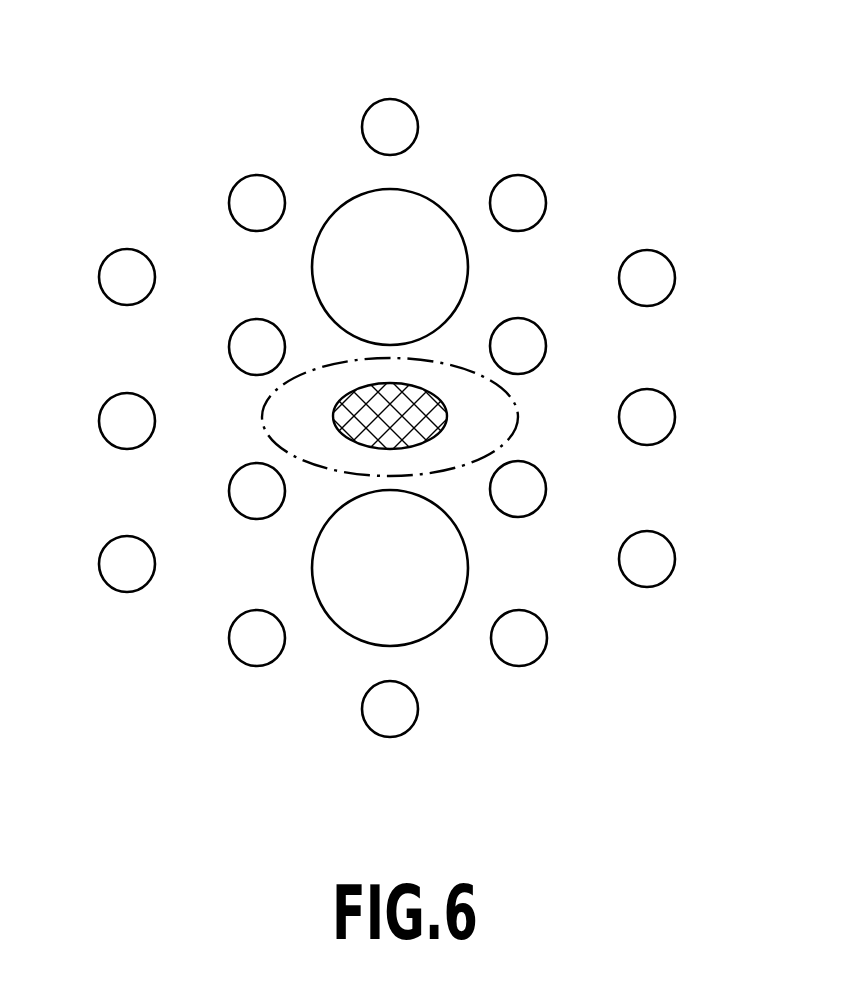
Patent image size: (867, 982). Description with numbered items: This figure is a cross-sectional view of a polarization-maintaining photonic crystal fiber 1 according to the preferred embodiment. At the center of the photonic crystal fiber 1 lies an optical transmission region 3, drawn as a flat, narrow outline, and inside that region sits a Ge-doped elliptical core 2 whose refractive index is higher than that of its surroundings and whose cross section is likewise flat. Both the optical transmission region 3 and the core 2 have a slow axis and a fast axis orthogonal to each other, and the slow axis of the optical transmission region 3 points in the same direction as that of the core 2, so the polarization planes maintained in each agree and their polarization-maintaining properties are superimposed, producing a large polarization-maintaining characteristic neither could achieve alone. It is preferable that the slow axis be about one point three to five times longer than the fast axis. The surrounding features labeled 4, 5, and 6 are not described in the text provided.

The photonic crystal fiber 1 is at (403, 39).
The elliptical core 2 is at (447, 414).
The optical transmission region 3 is at (262, 413).
The detector array 4 is at (608, 463).
The optical fiber 5 is at (105, 276).
The large optical fiber 6 is at (421, 214).